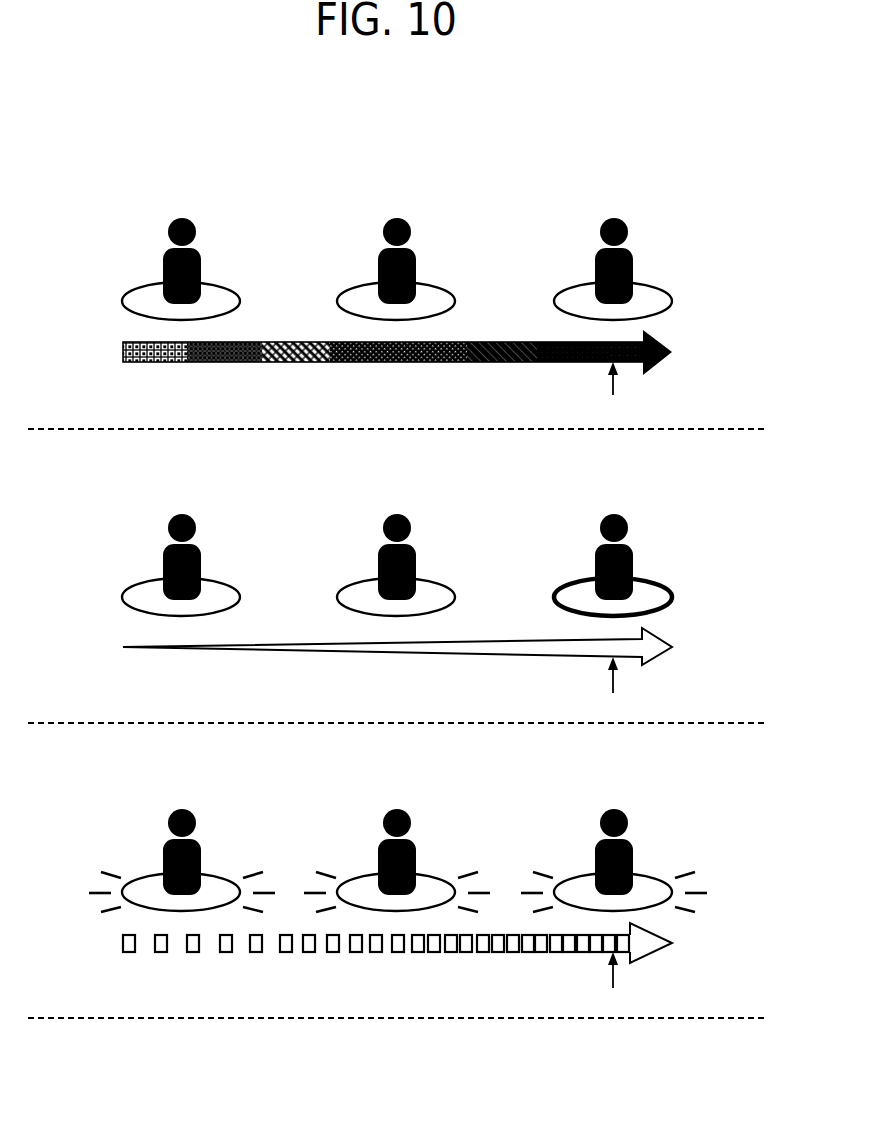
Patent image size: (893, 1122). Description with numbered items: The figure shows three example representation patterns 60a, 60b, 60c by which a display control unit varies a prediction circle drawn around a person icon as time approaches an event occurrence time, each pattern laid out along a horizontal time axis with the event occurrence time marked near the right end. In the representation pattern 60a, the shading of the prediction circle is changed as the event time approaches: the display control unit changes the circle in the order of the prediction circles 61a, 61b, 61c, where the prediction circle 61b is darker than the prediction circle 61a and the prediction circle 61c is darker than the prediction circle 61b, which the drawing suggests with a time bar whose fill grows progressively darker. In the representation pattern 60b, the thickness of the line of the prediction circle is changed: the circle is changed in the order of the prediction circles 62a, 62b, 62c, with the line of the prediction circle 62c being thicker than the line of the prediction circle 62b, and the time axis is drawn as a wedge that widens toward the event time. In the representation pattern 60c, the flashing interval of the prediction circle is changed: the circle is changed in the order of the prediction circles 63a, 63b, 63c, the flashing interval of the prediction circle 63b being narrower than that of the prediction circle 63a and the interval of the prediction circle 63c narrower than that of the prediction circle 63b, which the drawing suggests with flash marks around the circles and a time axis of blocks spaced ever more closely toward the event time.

The representation pattern 60a is at (692, 192).
The representation pattern 60b is at (692, 487).
The representation pattern 60c is at (692, 783).
The prediction circle 61a is at (214, 285).
The prediction circle 61b is at (429, 285).
The prediction circle 61c is at (646, 285).
The prediction circle 62a is at (214, 581).
The prediction circle 62b is at (429, 581).
The prediction circle 62c is at (646, 581).
The prediction circle 63a is at (214, 876).
The prediction circle 63b is at (429, 876).
The prediction circle 63c is at (646, 876).